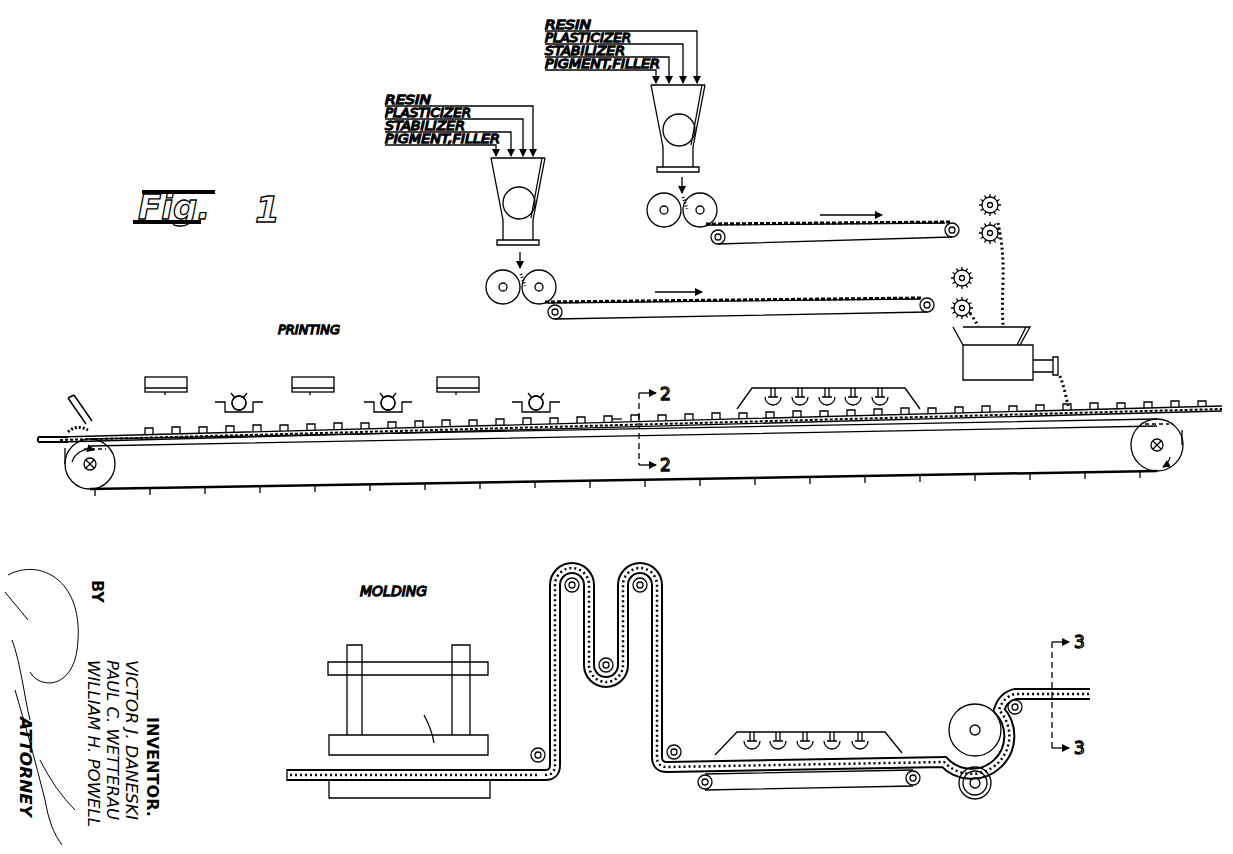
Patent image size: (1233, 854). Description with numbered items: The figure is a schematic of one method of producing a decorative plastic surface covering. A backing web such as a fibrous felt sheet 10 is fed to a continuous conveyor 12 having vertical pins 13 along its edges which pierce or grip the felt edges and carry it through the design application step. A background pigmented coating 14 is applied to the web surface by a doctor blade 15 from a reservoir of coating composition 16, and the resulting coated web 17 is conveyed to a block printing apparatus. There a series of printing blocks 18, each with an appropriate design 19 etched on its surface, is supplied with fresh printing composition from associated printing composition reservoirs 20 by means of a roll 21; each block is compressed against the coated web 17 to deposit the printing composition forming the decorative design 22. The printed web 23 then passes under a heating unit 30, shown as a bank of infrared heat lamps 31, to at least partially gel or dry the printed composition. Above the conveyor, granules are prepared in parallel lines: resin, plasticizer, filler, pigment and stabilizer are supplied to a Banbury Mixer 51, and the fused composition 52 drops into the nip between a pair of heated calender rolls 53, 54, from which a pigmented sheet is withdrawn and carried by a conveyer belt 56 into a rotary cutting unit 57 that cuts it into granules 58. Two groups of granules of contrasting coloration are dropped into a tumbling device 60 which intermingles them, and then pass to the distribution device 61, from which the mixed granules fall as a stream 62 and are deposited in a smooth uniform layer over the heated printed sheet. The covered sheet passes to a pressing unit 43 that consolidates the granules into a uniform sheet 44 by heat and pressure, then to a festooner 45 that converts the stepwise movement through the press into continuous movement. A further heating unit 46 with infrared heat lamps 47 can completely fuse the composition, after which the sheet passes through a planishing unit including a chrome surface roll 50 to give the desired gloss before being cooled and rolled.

The fibrous felt sheet 10 is at (50, 436).
The continuous conveyor 12 is at (322, 492).
The vertical pins 13 is at (572, 488).
The background pigmented coating 14 is at (105, 430).
The doctor blade 15 is at (86, 398).
The reservoir of coating composition 16 is at (72, 426).
The coated web 17 is at (132, 432).
The printing blocks 18 is at (172, 377).
The design 19 is at (168, 393).
The printing composition reservoirs 20 is at (263, 402).
The roll 21 is at (239, 396).
The decorative design 22 is at (604, 415).
The printed web 23 is at (617, 418).
The heating unit 30 is at (860, 380).
The infrared heat lamps 31 is at (846, 398).
The pressing unit 43 is at (318, 660).
The uniform sheet 44 is at (504, 768).
The festooner 45 is at (693, 618).
The heating unit 46 is at (855, 705).
The infrared heat lamps 47 is at (807, 742).
The chrome surface roll 50 is at (966, 705).
The Banbury Mixer 51 is at (531, 206).
The fused composition 52 is at (526, 281).
The calender roll 53 is at (486, 291).
The calender roll 54 is at (557, 289).
The conveyer belt 56 is at (761, 320).
The rotary cutting unit 57 is at (999, 208).
The granules 58 is at (1032, 294).
The tumbling device 60 is at (963, 365).
The distribution device 61 is at (1058, 366).
The granule stream 62 is at (1067, 396).